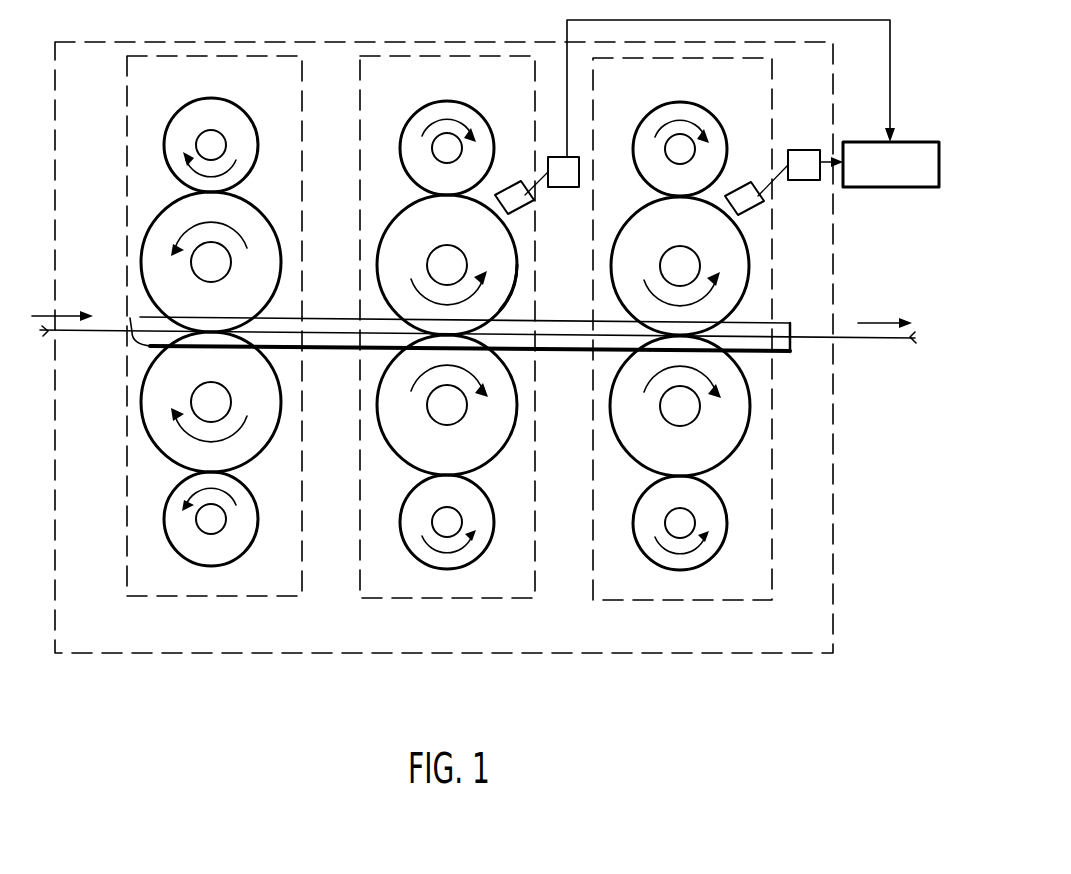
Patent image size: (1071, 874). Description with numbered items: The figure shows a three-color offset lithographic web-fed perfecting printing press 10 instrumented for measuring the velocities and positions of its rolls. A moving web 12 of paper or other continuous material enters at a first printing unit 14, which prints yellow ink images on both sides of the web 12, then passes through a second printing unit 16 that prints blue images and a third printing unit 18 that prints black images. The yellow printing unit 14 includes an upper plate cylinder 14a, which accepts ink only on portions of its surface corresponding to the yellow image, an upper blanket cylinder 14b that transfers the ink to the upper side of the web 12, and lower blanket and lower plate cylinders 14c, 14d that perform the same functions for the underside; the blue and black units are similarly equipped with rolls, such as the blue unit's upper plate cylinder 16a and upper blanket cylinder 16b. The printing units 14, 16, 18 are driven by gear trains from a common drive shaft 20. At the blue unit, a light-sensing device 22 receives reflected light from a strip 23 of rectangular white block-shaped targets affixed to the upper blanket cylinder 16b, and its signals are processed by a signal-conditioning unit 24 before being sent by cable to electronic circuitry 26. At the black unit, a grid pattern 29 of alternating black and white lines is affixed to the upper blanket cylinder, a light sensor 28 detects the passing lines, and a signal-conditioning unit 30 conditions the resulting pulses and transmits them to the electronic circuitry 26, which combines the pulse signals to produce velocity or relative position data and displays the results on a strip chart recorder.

The printing press 10 is at (838, 392).
The web 12 is at (74, 332).
The first printing unit 14 is at (303, 176).
The upper plate cylinder 14a is at (222, 98).
The upper blanket cylinder 14b is at (158, 213).
The lower blanket cylinder 14c is at (170, 465).
The lower plate cylinder 14d is at (226, 562).
The second printing unit 16 is at (360, 92).
The upper plate cylinder 16a is at (450, 100).
The upper blanket cylinder 16b is at (410, 201).
The third printing unit 18 is at (776, 97).
The common drive shaft 20 is at (128, 317).
The light-sensing device 22 is at (528, 207).
The strip 23 is at (518, 266).
The signal-conditioning unit 24 is at (576, 160).
The electronic circuitry 26 is at (887, 188).
The light sensor 28 is at (760, 208).
The grid pattern 29 is at (750, 265).
The signal-conditioning unit 30 is at (822, 145).